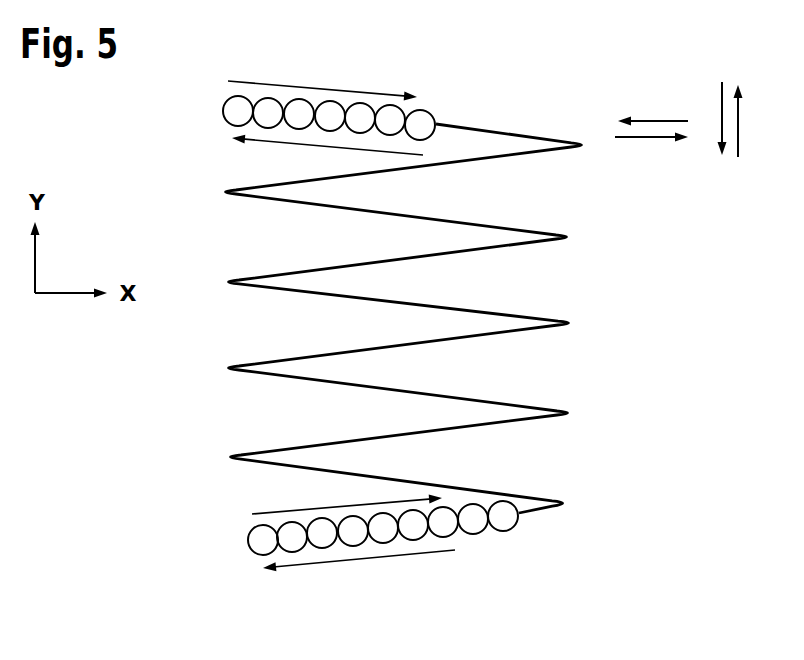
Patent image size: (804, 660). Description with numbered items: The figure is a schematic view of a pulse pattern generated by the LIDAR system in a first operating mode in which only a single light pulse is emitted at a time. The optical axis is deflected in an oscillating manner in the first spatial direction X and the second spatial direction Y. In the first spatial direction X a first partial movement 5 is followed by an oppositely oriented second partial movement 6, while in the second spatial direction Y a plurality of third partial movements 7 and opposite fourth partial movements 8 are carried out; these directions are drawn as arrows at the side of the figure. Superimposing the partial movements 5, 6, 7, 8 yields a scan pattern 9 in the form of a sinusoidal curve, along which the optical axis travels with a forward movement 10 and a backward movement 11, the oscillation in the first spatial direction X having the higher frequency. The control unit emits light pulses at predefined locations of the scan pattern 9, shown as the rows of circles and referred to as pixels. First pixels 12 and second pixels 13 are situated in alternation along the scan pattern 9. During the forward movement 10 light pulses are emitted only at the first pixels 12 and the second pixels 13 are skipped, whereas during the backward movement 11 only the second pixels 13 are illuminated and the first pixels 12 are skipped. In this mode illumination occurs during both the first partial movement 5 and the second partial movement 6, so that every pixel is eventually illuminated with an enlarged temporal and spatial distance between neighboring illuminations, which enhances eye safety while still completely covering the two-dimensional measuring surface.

The first partial movement 5 is at (657, 118).
The second partial movement 6 is at (657, 140).
The third partial movement 7 is at (721, 115).
The fourth partial movement 8 is at (739, 115).
The scan pattern 9 is at (574, 237).
The forward movement 10 is at (418, 92).
The backward movement 11 is at (258, 140).
The first pixels 12 is at (239, 96).
The second pixels 13 is at (269, 98).